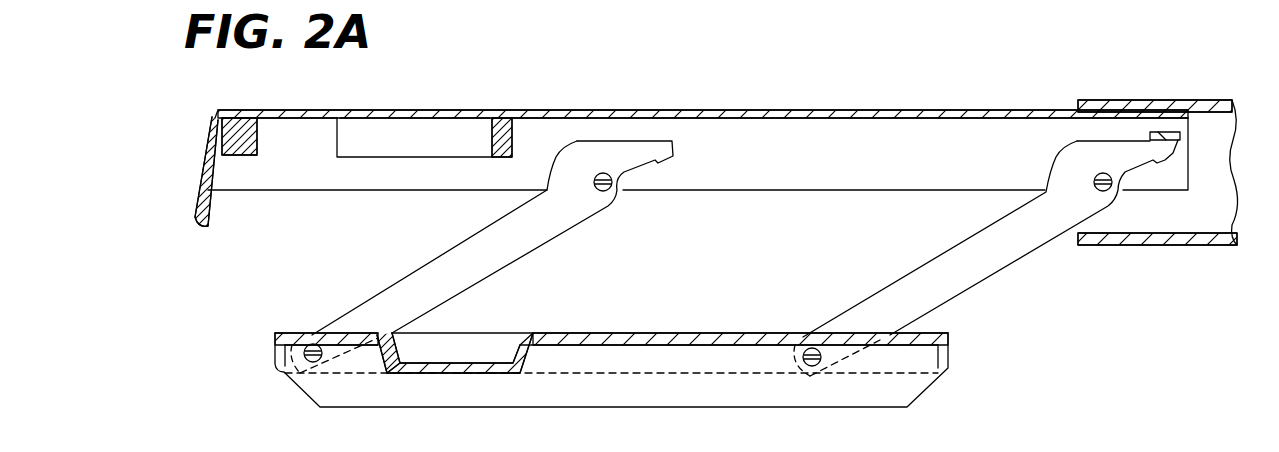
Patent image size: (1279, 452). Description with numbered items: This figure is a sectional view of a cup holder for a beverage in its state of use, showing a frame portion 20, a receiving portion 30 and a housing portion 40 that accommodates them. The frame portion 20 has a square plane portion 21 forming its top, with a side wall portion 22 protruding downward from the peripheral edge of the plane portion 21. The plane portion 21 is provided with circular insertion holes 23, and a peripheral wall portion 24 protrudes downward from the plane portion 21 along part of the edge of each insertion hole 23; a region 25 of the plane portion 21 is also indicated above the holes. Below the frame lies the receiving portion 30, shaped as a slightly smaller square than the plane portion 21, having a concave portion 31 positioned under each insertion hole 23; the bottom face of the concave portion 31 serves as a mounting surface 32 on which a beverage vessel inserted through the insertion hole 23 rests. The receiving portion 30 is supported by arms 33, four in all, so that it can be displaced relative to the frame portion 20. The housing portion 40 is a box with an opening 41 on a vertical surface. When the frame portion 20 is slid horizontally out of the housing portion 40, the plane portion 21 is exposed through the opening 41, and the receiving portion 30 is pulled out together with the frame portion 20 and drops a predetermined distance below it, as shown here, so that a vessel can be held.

The frame portion 20 is at (691, 151).
The plane portion 21 is at (741, 110).
The side wall portion 22 is at (748, 184).
The insertion hole 23 is at (492, 148).
The peripheral wall portion 24 is at (340, 150).
The recess 25 is at (412, 118).
The receiving portion 30 is at (611, 341).
The concave portion 31 is at (405, 363).
The mounting surface 32 is at (482, 363).
The arm 33 is at (550, 240).
The housing portion 40 is at (1144, 205).
The opening 41 is at (1076, 236).